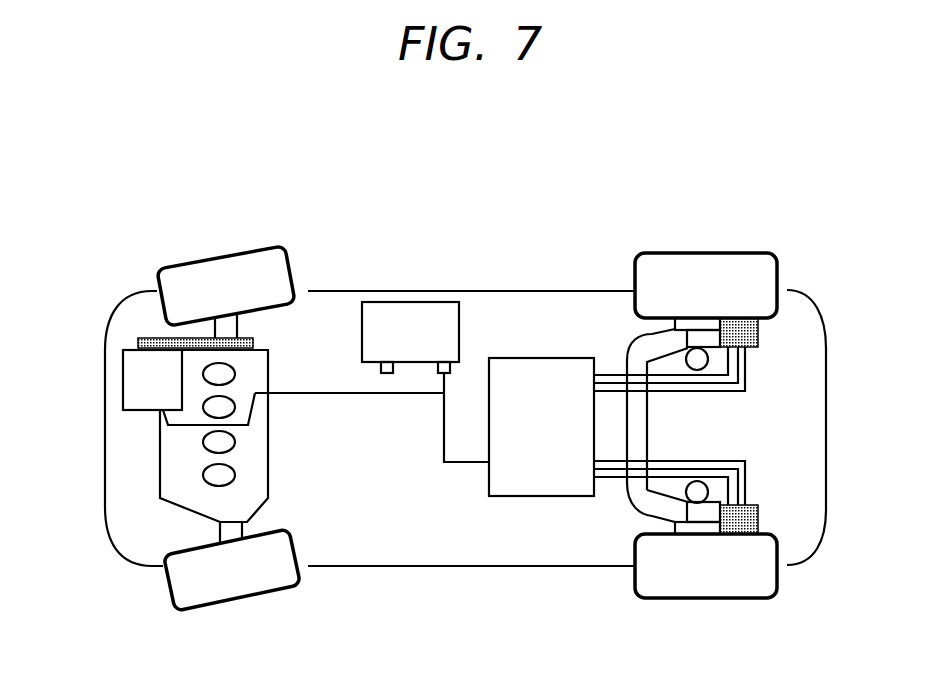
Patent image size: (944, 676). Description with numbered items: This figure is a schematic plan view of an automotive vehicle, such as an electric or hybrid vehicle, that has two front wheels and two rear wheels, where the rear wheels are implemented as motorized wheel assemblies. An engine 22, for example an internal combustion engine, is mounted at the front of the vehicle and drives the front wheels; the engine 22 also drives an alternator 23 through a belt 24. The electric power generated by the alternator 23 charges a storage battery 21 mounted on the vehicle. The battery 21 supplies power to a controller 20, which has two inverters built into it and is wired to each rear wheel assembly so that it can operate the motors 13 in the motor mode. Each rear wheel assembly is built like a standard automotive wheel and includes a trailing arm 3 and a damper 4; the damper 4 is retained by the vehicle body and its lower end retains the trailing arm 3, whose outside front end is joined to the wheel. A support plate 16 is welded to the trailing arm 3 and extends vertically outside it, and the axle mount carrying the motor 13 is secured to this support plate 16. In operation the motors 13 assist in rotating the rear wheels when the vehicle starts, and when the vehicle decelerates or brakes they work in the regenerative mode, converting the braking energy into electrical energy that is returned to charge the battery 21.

The trailing arm 3 is at (635, 490).
The damper 4 is at (694, 348).
The motor 13 is at (758, 325).
The support plate 16 is at (703, 527).
The controller 20 is at (550, 358).
The storage battery 21 is at (445, 302).
The engine 22 is at (160, 476).
The alternator 23 is at (123, 366).
The belt 24 is at (147, 338).